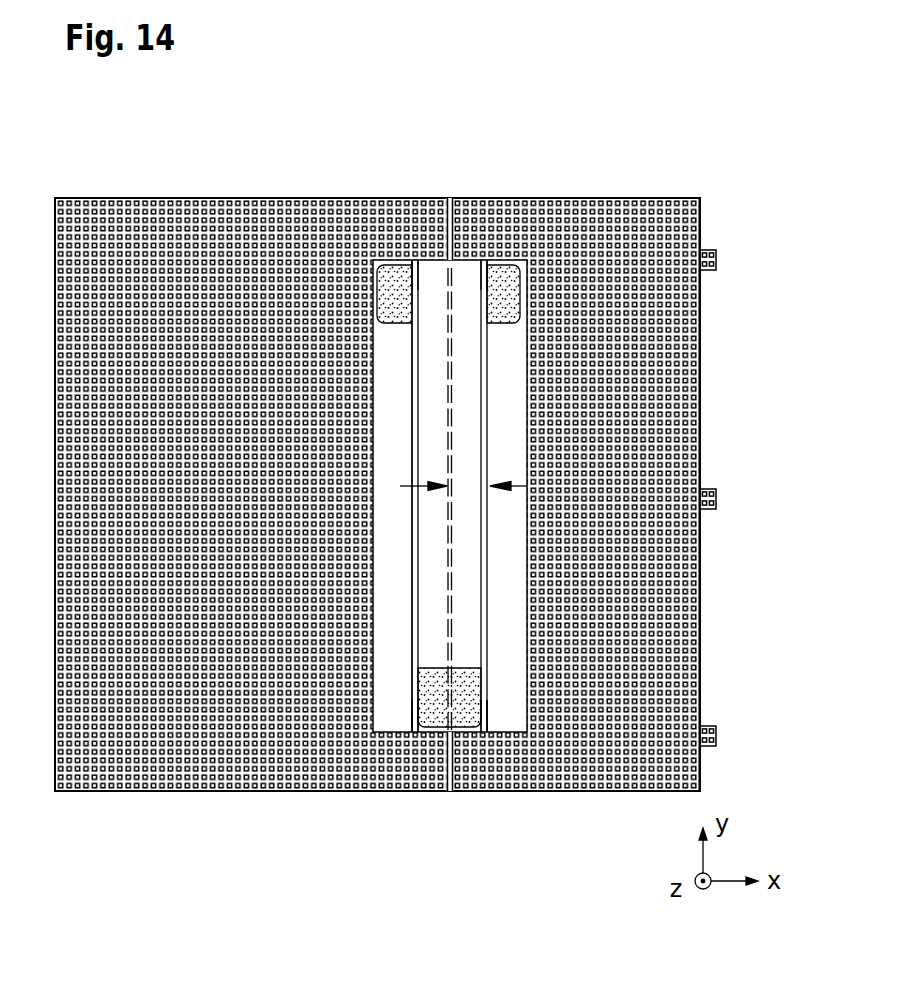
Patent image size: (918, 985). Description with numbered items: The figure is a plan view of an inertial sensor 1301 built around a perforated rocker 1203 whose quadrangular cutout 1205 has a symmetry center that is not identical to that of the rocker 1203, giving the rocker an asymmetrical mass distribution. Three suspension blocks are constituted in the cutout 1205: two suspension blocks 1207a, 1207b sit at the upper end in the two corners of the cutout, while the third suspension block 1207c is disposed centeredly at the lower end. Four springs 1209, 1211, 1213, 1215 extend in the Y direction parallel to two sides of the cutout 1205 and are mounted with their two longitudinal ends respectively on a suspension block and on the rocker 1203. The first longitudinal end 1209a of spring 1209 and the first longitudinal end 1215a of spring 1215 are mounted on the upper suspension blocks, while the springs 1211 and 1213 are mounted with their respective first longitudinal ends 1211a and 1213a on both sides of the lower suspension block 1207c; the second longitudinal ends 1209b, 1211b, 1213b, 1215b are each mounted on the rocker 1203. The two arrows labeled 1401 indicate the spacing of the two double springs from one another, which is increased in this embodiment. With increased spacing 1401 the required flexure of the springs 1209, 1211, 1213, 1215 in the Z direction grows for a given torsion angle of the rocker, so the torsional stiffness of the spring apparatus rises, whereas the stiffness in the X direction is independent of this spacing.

The rocker 1203 is at (159, 791).
The cutout 1205 is at (380, 713).
The suspension block 1207a is at (390, 268).
The suspension block 1207b is at (520, 266).
The suspension block 1207c is at (432, 713).
The spring 1209 is at (413, 345).
The first longitudinal end 1209a is at (411, 265).
The second longitudinal end 1209b is at (413, 728).
The spring 1211 is at (420, 390).
The first longitudinal end 1211a is at (417, 720).
The second longitudinal end 1211b is at (416, 267).
The spring 1213 is at (481, 346).
The first longitudinal end 1213a is at (487, 728).
The second longitudinal end 1213b is at (482, 268).
The spring 1215 is at (481, 598).
The first longitudinal end 1215a is at (498, 288).
The second longitudinal end 1215b is at (488, 731).
The inertial sensor 1301 is at (647, 84).
The spacing 1401 is at (403, 484).